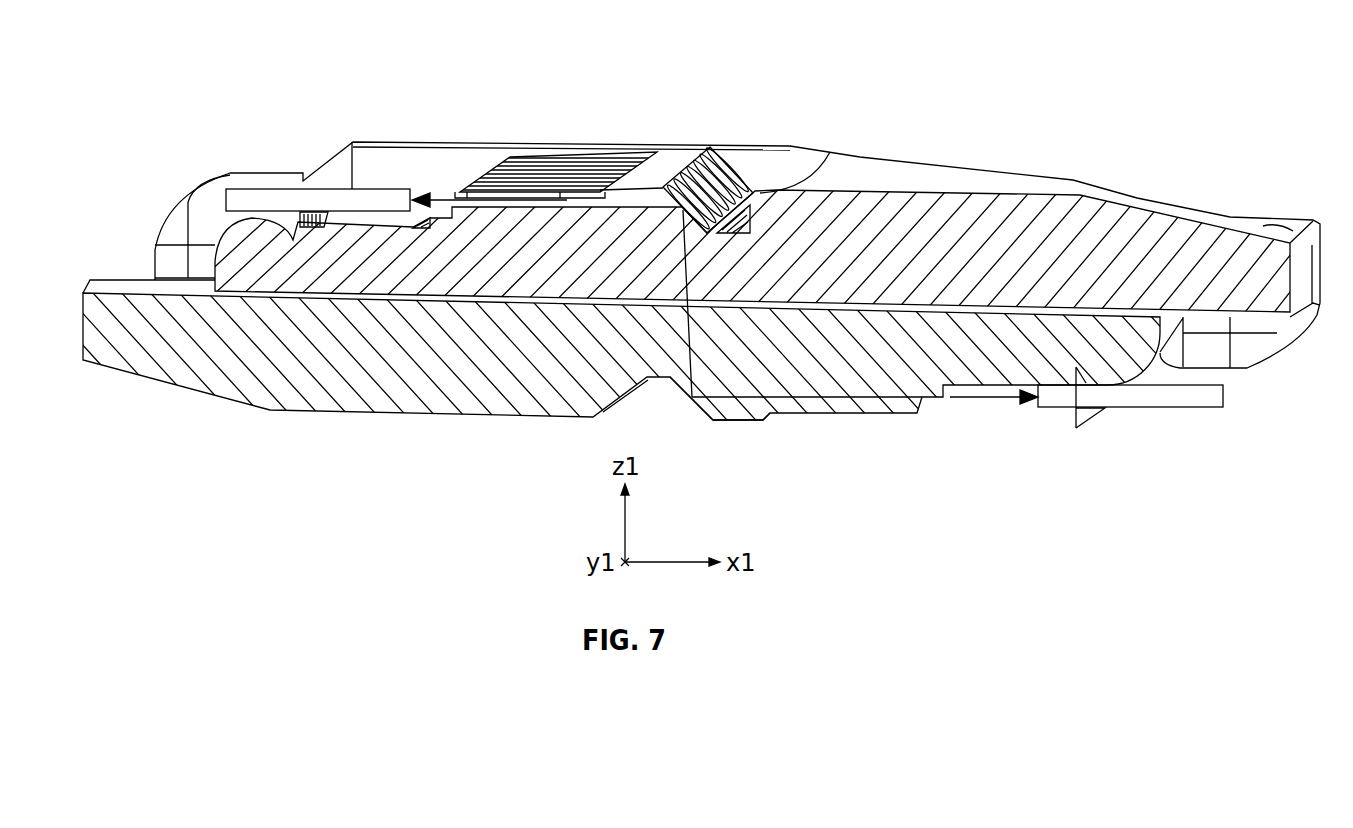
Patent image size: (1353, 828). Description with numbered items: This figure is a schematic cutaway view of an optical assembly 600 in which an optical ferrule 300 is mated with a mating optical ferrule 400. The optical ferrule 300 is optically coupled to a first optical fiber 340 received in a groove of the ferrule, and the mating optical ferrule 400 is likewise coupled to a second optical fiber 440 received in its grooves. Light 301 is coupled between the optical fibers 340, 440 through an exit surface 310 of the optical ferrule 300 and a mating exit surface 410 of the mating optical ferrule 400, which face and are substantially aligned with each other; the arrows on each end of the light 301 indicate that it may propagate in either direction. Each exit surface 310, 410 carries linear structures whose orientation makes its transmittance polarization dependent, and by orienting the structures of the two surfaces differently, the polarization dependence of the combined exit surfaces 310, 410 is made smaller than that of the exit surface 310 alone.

The optical ferrule 300 is at (890, 155).
The light 301 is at (553, 186).
The exit surface 310 is at (693, 297).
The optical fiber 340 is at (277, 203).
The mating optical ferrule 400 is at (147, 365).
The mating exit surface 410 is at (693, 297).
The optical fiber 440 is at (1157, 410).
The optical assembly 600 is at (1184, 134).